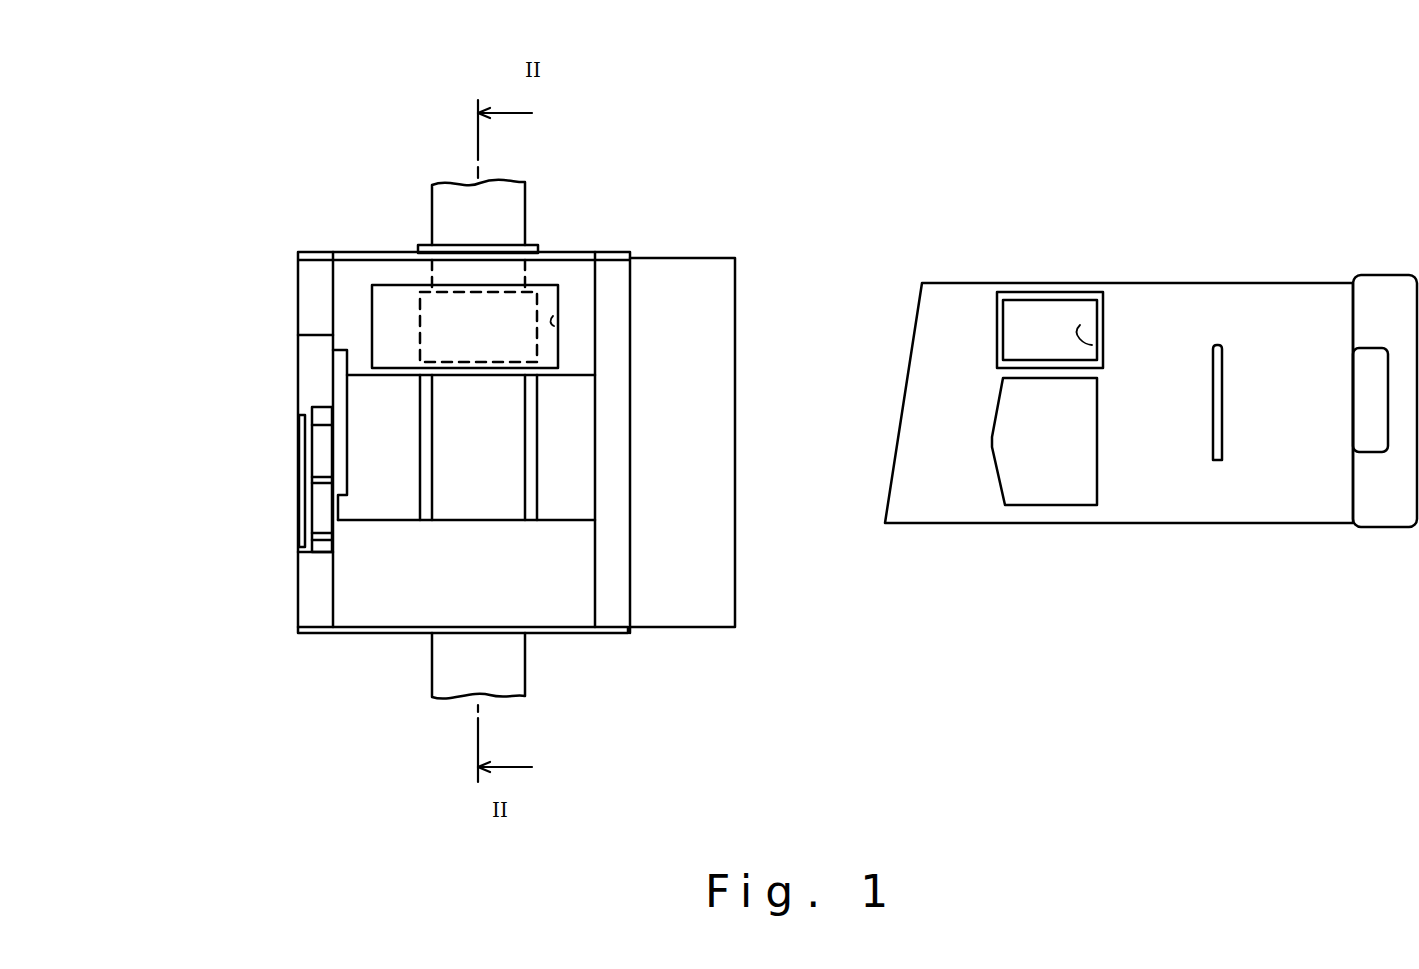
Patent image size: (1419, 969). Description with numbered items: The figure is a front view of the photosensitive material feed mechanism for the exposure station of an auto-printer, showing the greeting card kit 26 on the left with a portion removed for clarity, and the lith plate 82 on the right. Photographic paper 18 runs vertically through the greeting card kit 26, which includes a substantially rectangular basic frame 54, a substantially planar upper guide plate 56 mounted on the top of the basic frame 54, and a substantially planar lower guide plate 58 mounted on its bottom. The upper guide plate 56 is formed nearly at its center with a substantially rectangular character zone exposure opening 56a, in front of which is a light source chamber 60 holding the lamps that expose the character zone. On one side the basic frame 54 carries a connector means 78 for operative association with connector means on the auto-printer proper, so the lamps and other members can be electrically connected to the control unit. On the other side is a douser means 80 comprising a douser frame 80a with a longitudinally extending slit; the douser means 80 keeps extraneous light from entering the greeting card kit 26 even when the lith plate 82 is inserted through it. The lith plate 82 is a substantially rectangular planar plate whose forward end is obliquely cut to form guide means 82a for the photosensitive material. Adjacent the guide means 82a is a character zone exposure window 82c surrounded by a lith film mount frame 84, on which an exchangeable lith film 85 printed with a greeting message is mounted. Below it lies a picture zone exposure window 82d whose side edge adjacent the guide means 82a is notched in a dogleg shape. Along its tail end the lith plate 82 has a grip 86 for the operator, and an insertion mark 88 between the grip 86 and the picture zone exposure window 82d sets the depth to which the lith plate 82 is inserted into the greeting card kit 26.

The photographic paper 18 is at (452, 665).
The greeting card kit 26 is at (695, 195).
The basic frame 54 is at (348, 632).
The upper guide plate 56 is at (352, 272).
The character zone exposure opening 56a is at (560, 290).
The lower guide plate 58 is at (538, 597).
The light source chamber 60 is at (553, 316).
The connector means 78 is at (318, 457).
The douser means 80 is at (760, 627).
The douser frame 80a is at (677, 602).
The lith plate 82 is at (1222, 257).
The guide means 82a is at (928, 462).
The character zone exposure window 82c is at (1080, 325).
The picture zone exposure window 82d is at (1097, 463).
The lith film mount frame 84 is at (1040, 297).
The lith film 85 is at (1023, 333).
The grip 86 is at (1382, 497).
The insertion mark 88 is at (1220, 445).